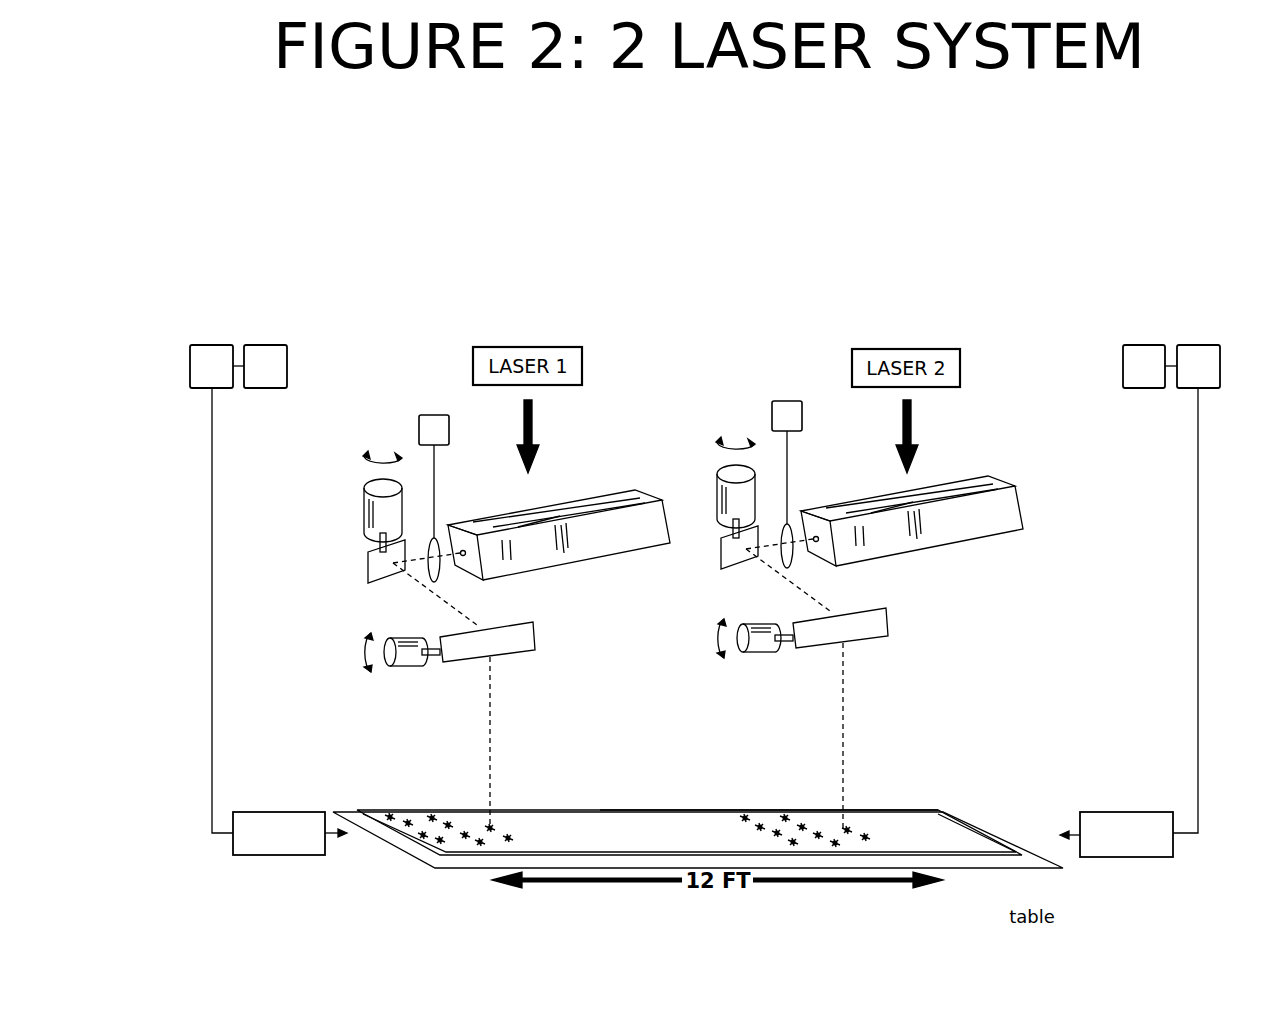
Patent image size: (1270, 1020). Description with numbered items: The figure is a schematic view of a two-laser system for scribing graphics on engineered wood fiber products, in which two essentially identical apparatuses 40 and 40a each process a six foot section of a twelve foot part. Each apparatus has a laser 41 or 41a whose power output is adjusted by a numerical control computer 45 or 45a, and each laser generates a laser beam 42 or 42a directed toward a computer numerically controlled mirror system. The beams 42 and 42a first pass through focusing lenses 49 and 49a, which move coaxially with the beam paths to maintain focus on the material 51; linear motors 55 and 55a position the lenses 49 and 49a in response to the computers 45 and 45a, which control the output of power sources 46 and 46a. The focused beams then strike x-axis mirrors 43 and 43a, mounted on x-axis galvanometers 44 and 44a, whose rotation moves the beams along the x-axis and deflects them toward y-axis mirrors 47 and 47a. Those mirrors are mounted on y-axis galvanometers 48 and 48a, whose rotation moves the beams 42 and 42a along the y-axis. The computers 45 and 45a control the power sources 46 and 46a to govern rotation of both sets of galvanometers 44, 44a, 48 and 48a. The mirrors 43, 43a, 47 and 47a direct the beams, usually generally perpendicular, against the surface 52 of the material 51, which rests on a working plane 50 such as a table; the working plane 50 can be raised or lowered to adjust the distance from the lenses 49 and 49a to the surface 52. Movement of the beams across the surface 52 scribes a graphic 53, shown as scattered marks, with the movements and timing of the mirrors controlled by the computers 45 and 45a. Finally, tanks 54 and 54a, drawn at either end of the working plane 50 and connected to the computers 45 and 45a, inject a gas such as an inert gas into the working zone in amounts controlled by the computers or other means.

The apparatus 40 is at (250, 325).
The apparatus 40a is at (1161, 325).
The laser 41 is at (597, 503).
The laser 41a is at (912, 514).
The laser beam 42 is at (423, 589).
The laser beam 42a is at (781, 579).
The x-axis mirror 43 is at (368, 569).
The x-axis mirror 43a is at (719, 547).
The x-axis galvanometer 44 is at (390, 506).
The x-axis galvanometer 44a is at (754, 487).
The numerical control computer 45 is at (211, 366).
The numerical control computer 45a is at (1144, 366).
The power source 46 is at (265, 366).
The power source 46a is at (1198, 366).
The y-axis mirror 47 is at (530, 642).
The y-axis mirror 47a is at (864, 628).
The y-axis galvanometer 48 is at (405, 666).
The y-axis galvanometer 48a is at (755, 654).
The lens 49 is at (437, 577).
The lens 49a is at (804, 555).
The working plane 50 is at (1013, 868).
The material 51 is at (965, 817).
The surface 52 is at (913, 825).
The graphic 53 is at (510, 836).
The tank 54 is at (279, 621).
The tank 54a is at (1129, 622).
The linear motor 55 is at (434, 476).
The linear motor 55a is at (787, 462).